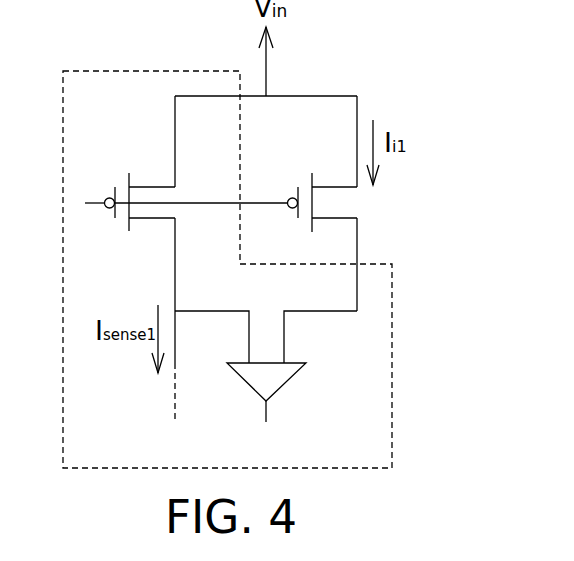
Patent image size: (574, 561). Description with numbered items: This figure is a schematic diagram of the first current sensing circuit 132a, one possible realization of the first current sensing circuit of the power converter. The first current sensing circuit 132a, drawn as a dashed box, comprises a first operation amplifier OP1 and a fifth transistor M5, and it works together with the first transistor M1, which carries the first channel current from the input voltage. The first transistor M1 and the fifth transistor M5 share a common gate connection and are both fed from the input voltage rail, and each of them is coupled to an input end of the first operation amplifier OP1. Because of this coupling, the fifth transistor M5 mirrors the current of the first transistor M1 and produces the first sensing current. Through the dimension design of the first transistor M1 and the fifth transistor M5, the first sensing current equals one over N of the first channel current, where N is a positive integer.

The first current sensing circuit 132a is at (107, 71).
The fifth transistor M5 is at (136, 221).
The first transistor M1 is at (347, 203).
The first operation amplifier OP1 is at (285, 383).